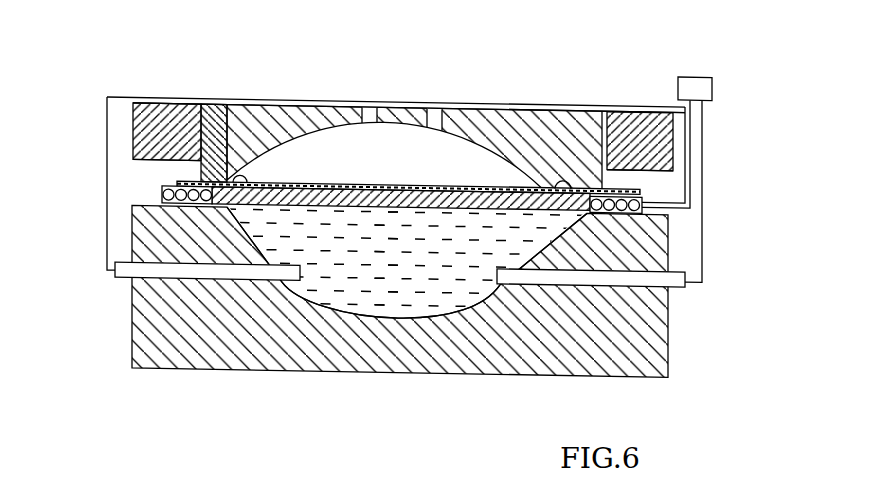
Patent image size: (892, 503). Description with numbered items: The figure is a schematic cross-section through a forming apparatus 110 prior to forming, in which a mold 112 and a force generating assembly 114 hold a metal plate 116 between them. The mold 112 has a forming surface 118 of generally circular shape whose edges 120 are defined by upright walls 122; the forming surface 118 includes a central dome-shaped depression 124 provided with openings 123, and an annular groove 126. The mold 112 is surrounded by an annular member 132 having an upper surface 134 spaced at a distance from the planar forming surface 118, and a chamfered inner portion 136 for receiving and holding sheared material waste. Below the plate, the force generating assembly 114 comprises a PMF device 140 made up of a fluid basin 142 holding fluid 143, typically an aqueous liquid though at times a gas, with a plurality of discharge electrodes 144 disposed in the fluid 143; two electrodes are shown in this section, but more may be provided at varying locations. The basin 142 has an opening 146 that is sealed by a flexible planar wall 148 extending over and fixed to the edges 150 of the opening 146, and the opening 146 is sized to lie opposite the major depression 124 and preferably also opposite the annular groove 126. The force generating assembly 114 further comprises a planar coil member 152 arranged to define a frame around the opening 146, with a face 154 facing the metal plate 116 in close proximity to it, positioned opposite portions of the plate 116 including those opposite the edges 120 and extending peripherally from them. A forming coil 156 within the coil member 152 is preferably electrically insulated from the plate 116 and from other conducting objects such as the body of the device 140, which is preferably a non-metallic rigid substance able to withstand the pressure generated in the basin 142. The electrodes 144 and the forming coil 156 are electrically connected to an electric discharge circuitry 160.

The apparatus 110 is at (93, 386).
The mold 112 is at (557, 123).
The force generating assembly 114 is at (91, 182).
The metal plate 116 is at (337, 183).
The forming surface 118 is at (223, 132).
The edges 120 is at (623, 113).
The upright walls 122 is at (202, 173).
The openings 123 is at (437, 118).
The central dome-shaped depression 124 is at (393, 157).
The annular groove 126 is at (563, 182).
The annular member 132 is at (168, 117).
The upper surface 134 is at (657, 177).
The chamfered inner portion 136 is at (202, 167).
The PMF device 140 is at (597, 360).
The fluid basin 142 is at (482, 292).
The fluid 143 is at (333, 270).
The discharge electrodes 144 is at (127, 270).
The opening 146 is at (417, 212).
The flexible planar wall 148 is at (372, 203).
The edges 150 is at (617, 229).
The planar coil member 152 is at (162, 195).
The face 154 is at (703, 205).
The forming coil 156 is at (637, 188).
The electric discharge circuitry 160 is at (678, 90).